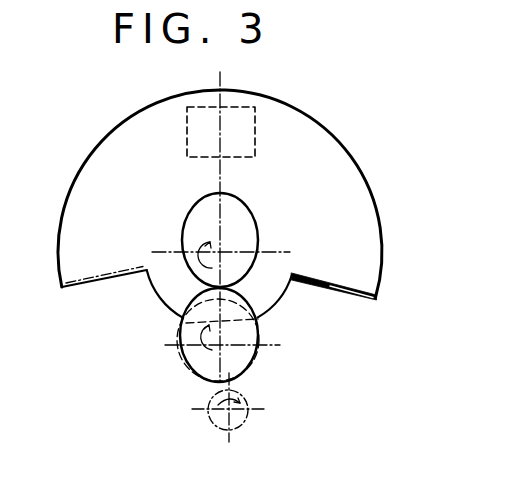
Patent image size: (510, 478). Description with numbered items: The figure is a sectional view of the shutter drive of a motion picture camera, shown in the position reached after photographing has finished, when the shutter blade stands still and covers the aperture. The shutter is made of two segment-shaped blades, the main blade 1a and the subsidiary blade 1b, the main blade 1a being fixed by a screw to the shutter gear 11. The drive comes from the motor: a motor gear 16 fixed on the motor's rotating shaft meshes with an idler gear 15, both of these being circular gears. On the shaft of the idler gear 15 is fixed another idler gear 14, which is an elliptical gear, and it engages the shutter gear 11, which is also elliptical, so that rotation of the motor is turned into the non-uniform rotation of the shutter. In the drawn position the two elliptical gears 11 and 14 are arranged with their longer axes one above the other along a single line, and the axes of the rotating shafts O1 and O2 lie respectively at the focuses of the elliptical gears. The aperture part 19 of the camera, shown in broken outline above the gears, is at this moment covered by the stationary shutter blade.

The main blade 1a is at (374, 240).
The subsidiary blade 1b is at (371, 301).
The shutter gear 11 is at (248, 218).
The idler gear 14 is at (252, 304).
The idler gear 15 is at (259, 362).
The motor gear 16 is at (246, 395).
The aperture part 19 is at (256, 128).
The axis of rotating shaft O1 is at (222, 337).
The axis of rotating shaft O2 is at (221, 227).